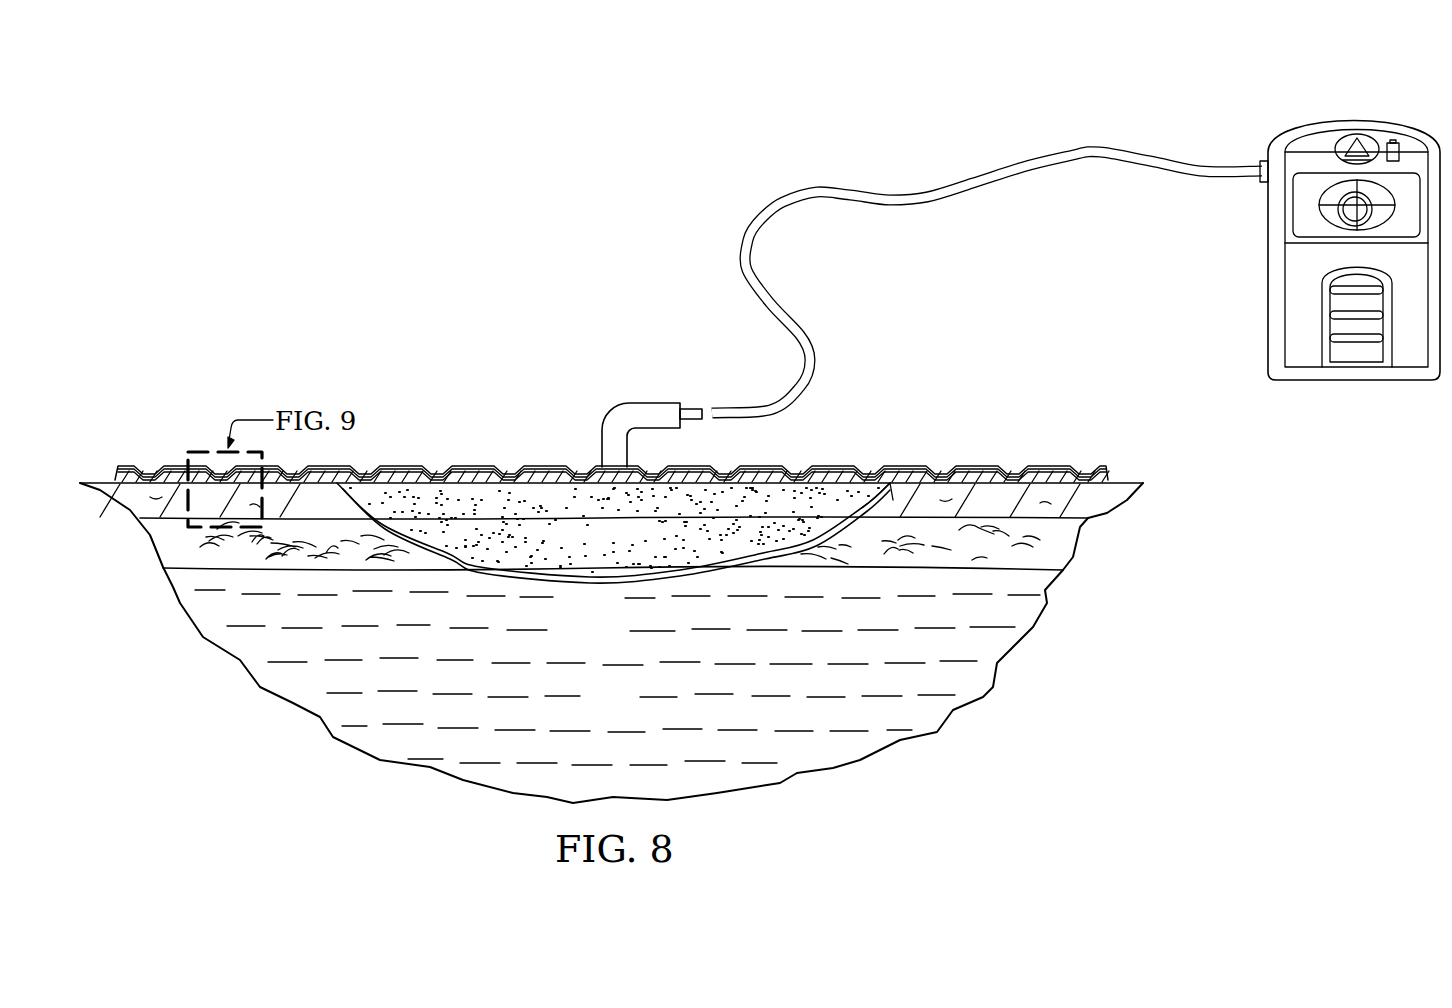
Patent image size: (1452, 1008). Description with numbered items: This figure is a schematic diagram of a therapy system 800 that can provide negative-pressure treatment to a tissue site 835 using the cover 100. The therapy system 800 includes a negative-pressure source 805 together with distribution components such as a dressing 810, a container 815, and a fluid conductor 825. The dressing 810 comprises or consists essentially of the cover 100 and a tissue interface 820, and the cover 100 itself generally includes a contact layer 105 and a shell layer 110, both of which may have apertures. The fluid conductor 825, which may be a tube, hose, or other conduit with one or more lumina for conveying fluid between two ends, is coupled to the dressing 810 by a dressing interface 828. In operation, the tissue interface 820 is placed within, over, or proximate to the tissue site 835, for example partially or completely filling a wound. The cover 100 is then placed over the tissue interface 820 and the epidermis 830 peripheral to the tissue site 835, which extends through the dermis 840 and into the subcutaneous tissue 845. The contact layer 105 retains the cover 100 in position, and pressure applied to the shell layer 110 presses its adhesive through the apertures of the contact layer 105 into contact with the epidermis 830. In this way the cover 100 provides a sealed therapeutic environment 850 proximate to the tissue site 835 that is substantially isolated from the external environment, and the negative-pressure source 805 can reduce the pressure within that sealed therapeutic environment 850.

The cover 100 is at (967, 465).
The contact layer 105 is at (1147, 487).
The shell layer 110 is at (1050, 467).
The therapy system 800 is at (547, 245).
The negative-pressure source 805 is at (1315, 224).
The dressing 810 is at (500, 408).
The container 815 is at (1268, 300).
The tissue interface 820 is at (641, 539).
The fluid conductor 825 is at (752, 253).
The dressing interface 828 is at (627, 406).
The epidermis 830 is at (1108, 510).
The tissue site 835 is at (596, 584).
The dermis 840 is at (150, 538).
The subcutaneous tissue 845 is at (633, 710).
The sealed therapeutic environment 850 is at (885, 485).